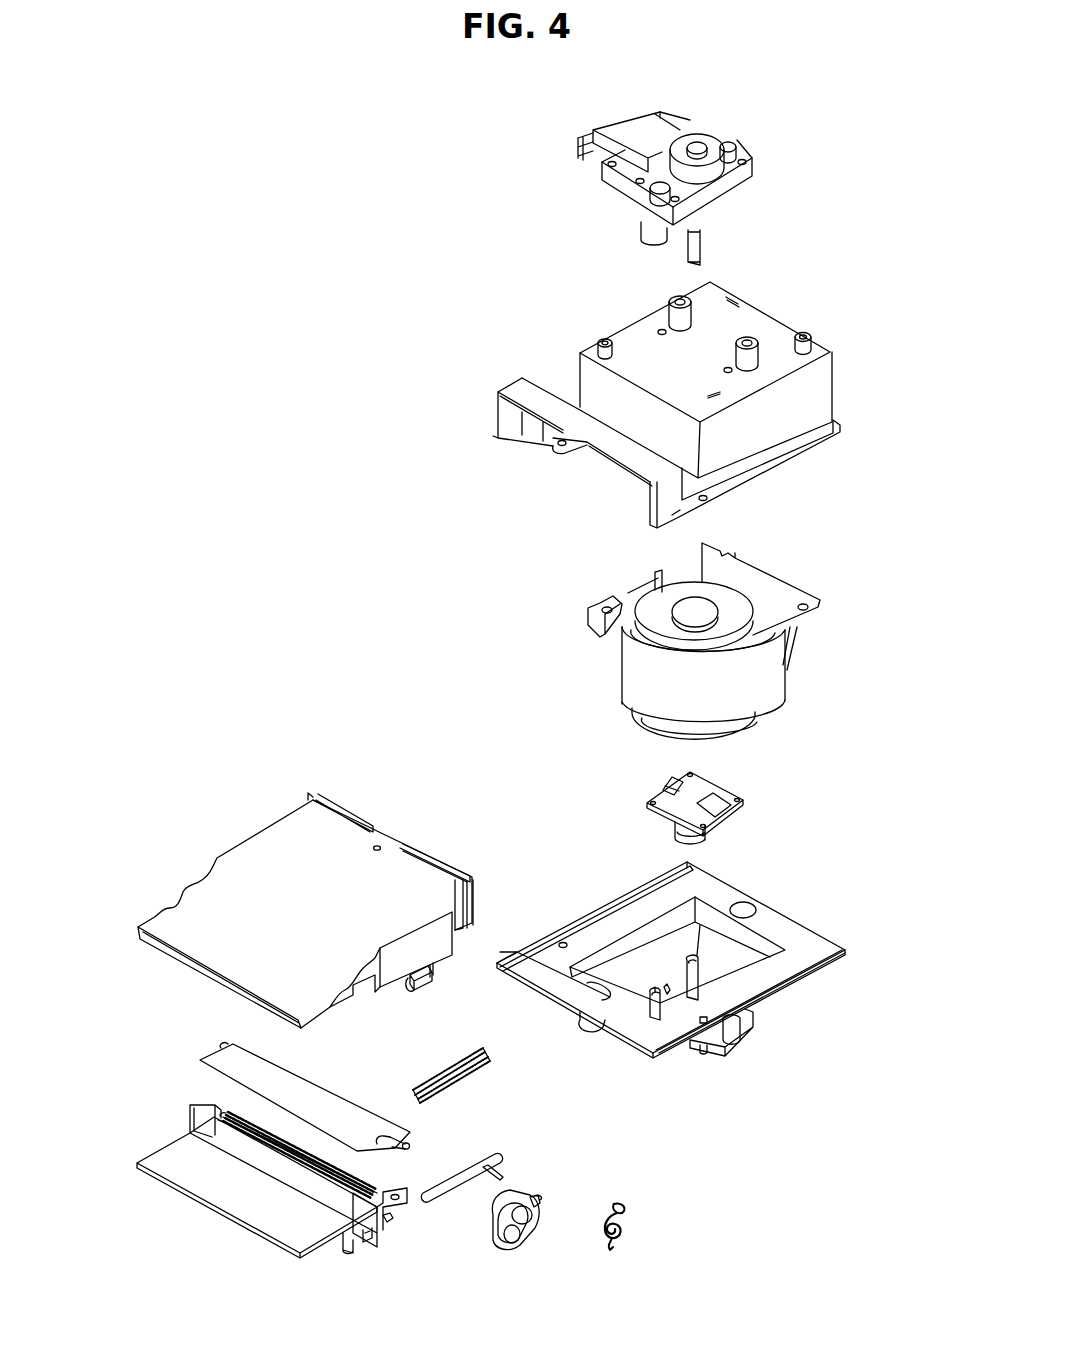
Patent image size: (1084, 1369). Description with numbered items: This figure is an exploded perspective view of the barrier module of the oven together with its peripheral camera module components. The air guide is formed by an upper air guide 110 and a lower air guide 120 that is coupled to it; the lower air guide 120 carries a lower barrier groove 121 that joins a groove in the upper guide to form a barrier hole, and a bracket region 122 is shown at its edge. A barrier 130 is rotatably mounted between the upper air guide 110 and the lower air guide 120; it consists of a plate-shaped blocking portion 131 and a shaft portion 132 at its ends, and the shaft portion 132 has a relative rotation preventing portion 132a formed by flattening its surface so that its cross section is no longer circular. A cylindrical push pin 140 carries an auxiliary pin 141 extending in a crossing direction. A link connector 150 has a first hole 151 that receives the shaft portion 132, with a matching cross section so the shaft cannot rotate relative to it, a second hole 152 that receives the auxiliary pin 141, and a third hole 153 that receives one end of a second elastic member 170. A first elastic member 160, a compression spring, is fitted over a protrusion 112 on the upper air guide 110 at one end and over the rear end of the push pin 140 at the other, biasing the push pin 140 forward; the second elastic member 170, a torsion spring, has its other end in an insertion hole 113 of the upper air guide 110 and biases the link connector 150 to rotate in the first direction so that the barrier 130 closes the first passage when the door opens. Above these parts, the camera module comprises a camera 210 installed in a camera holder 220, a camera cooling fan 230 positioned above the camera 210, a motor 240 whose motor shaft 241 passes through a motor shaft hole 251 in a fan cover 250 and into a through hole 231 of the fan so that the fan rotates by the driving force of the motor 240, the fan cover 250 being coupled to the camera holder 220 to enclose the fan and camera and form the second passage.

The upper air guide 110 is at (218, 845).
The protrusion 112 is at (384, 986).
The insertion hole 113 is at (417, 952).
The lower air guide 120 is at (257, 1243).
The lower barrier groove 121 is at (385, 1218).
The fastener 122 is at (345, 1243).
The barrier 130 is at (180, 1055).
The blocking portion 131 is at (268, 1085).
The shaft portion 132 is at (410, 1147).
The relative rotation preventing portion 132a is at (378, 1142).
The push pin 140 is at (492, 1152).
The auxiliary pin 141 is at (500, 1165).
The link connector 150 is at (530, 1240).
The first hole 151 is at (530, 1220).
The second hole 152 is at (517, 1242).
The third hole 153 is at (533, 1205).
The first elastic member 160 is at (468, 1052).
The second elastic member 170 is at (617, 1213).
The camera 210 is at (710, 792).
The camera holder 220 is at (792, 935).
The camera cooling fan 230 is at (735, 601).
The through hole 231 is at (797, 627).
The motor 240 is at (748, 177).
The motor shaft 241 is at (700, 255).
The fan cover 250 is at (823, 375).
The motor shaft hole 251 is at (694, 357).